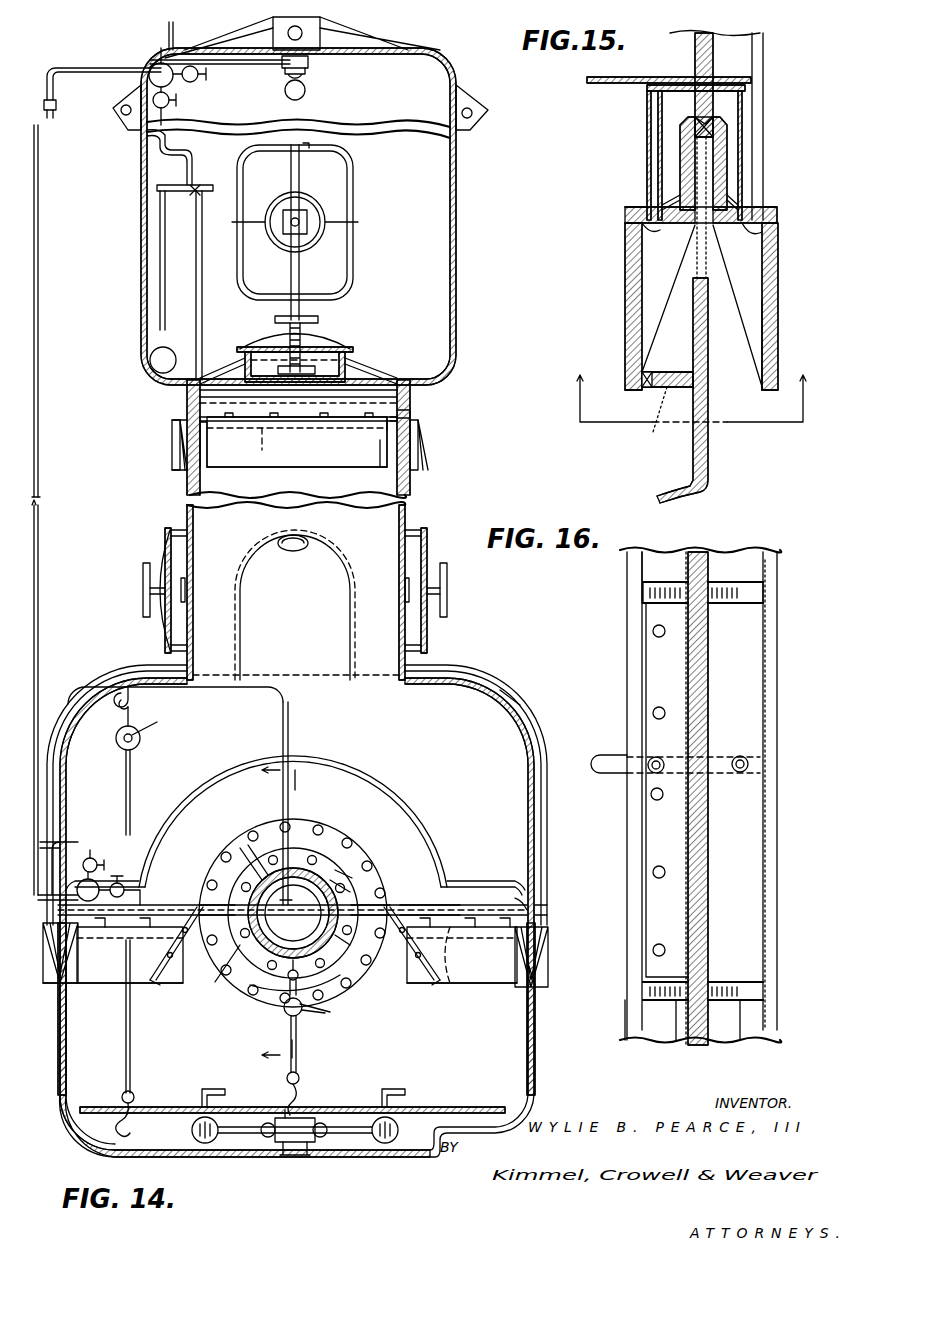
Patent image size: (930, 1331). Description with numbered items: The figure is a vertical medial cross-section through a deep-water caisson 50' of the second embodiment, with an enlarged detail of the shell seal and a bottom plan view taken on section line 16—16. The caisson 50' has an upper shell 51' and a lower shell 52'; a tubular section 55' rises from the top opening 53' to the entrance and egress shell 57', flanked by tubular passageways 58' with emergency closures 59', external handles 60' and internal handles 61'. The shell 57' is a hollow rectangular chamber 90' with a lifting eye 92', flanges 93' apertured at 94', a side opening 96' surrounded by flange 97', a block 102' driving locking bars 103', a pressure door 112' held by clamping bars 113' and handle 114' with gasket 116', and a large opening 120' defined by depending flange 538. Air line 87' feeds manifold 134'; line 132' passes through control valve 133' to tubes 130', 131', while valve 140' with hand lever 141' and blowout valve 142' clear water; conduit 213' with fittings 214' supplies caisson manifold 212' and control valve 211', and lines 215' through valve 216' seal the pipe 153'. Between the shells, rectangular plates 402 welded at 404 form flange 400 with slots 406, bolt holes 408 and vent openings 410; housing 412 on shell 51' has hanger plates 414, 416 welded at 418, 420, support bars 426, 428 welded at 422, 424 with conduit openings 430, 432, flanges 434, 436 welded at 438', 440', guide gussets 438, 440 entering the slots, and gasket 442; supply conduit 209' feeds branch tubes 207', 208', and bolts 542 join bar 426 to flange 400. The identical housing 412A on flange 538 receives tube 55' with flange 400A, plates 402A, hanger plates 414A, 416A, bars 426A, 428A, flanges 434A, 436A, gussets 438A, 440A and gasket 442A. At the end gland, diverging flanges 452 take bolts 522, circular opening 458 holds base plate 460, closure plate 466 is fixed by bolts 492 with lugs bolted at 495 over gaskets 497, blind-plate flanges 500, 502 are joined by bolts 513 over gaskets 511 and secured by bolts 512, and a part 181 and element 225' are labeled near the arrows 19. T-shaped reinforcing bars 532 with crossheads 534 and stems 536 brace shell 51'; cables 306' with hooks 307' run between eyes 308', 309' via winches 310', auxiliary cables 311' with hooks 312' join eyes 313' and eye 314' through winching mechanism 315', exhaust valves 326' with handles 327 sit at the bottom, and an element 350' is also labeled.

In FIG. 14, the direction arrow 19 is at (288, 922).
In FIG. 14, the caisson 50' is at (297, 892).
In FIG. 14, the upper shell 51' is at (532, 701).
In FIG. 15, the upper shell 51' is at (702, 84).
In FIG. 14, the lower shell 52' is at (317, 1009).
In FIG. 15, the lower shell 52' is at (703, 390).
In FIG. 16, the lower shell 52' is at (724, 798).
In FIG. 14, the top opening 53' is at (296, 620).
In FIG. 14, the tubular section 55' is at (322, 485).
In FIG. 14, the entrance and egress shell 57' is at (329, 144).
In FIG. 14, the tubular passageways 58' is at (313, 586).
In FIG. 14, the outside emergency closures 59' is at (142, 590).
In FIG. 14, the external operating handles 60' is at (295, 590).
In FIG. 14, the internal operating handles 61' is at (295, 588).
In FIG. 14, the high pressure air line 87' is at (153, 35).
In FIG. 14, the hollow rectangular chamber 90' is at (317, 216).
In FIG. 14, the lifting eye 92' is at (302, 32).
In FIG. 14, the laterally extending flanges 93' is at (298, 102).
In FIG. 14, the apertures 94' is at (305, 164).
In FIG. 14, the side opening 96' is at (318, 222).
In FIG. 14, the flange 97' is at (332, 222).
In FIG. 14, the block 102' is at (317, 205).
In FIG. 14, the locking bars 103' is at (295, 231).
In FIG. 14, the pressure door 112' is at (311, 337).
In FIG. 14, the clamping bars 113' is at (270, 346).
In FIG. 14, the operating handle 114' is at (321, 316).
In FIG. 14, the sealing gasket 116' is at (308, 361).
In FIG. 14, the large opening 120' is at (298, 404).
In FIG. 14, the air tube 130' is at (298, 402).
In FIG. 14, the air tube 131' is at (267, 437).
In FIG. 14, the air line 132' is at (195, 285).
In FIG. 14, the control valve 133' is at (183, 106).
In FIG. 14, the air manifold 134' is at (238, 298).
In FIG. 14, the valve 140' is at (144, 374).
In FIG. 14, the hand lever 141' is at (190, 162).
In FIG. 14, the blowout valve 142' is at (200, 83).
In FIG. 14, the pipe 153' is at (293, 913).
In FIG. 14, the lever 181 is at (330, 1018).
In FIG. 14, the inner branch tube 207' is at (292, 883).
In FIG. 15, the inner branch tube 207' is at (670, 152).
In FIG. 16, the inner branch tube 207' is at (606, 681).
In FIG. 14, the outer branch tube 208' is at (561, 882).
In FIG. 15, the outer branch tube 208' is at (780, 126).
In FIG. 16, the outer branch tube 208' is at (785, 795).
In FIG. 14, the compressed air supply conduit 209' is at (295, 825).
In FIG. 15, the compressed air supply conduit 209' is at (664, 98).
In FIG. 16, the compressed air supply conduit 209' is at (671, 752).
In FIG. 14, the control valve 211' is at (113, 875).
In FIG. 14, the caisson air manifold 212' is at (107, 854).
In FIG. 14, the supply conduit 213' is at (55, 510).
In FIG. 14, the fittings 214' is at (99, 484).
In FIG. 14, the air lines 215' is at (306, 803).
In FIG. 14, the control valve 216' is at (79, 834).
In FIG. 14, the ring 225' is at (322, 886).
In FIG. 14, the cables 306' is at (153, 921).
In FIG. 14, the hooks 307' is at (151, 1088).
In FIG. 14, the eyes 308' is at (109, 1134).
In FIG. 14, the eyes 309' is at (147, 700).
In FIG. 14, the winch assemblies 310' is at (121, 744).
In FIG. 14, the auxiliary cables 311' is at (321, 1044).
In FIG. 14, the hooks 312' is at (325, 1045).
In FIG. 14, the eyes 313' is at (293, 1149).
In FIG. 14, the eye 314' is at (279, 1010).
In FIG. 14, the winching mechanism 315' is at (268, 1001).
In FIG. 14, the exhaust valves 326' is at (292, 1140).
In FIG. 14, the handles 327 is at (213, 1092).
In FIG. 14, the bracket 350' is at (275, 79).
In FIG. 16, the flange 400 is at (635, 933).
In FIG. 14, the flange 400A is at (282, 444).
In FIG. 14, the rectangular plates 402 is at (105, 945).
In FIG. 15, the rectangular plates 402 is at (635, 372).
In FIG. 16, the rectangular plates 402 is at (655, 895).
In FIG. 14, the plates 402A is at (380, 440).
In FIG. 15, the welds 404 is at (692, 372).
In FIG. 16, the welds 404 is at (686, 855).
In FIG. 16, the slots 406 is at (645, 592).
In FIG. 15, the bolt holes 408 is at (648, 387).
In FIG. 16, the bolt holes 408 is at (657, 710).
In FIG. 16, the openings 410 is at (645, 775).
In FIG. 15, the housing 412 is at (614, 286).
In FIG. 14, the housing 412A is at (174, 438).
In FIG. 15, the inner hanger plate 414 is at (680, 160).
In FIG. 14, the inner hanger plate 414A is at (372, 427).
In FIG. 15, the outer hanger plate 416 is at (727, 160).
In FIG. 14, the outer hanger plate 416A is at (412, 420).
In FIG. 15, the weld 418 is at (682, 114).
In FIG. 15, the weld 420 is at (716, 120).
In FIG. 15, the weld 422 is at (666, 198).
In FIG. 15, the weld 424 is at (740, 190).
In FIG. 15, the inner support bar 426 is at (660, 226).
In FIG. 14, the inner support bar 426A is at (300, 417).
In FIG. 14, the outer support bar 428 is at (45, 960).
In FIG. 15, the outer support bar 428 is at (778, 238).
In FIG. 16, the outer support bar 428 is at (770, 815).
In FIG. 14, the outer support bar 428A is at (425, 437).
In FIG. 15, the conduit receiving opening 430 is at (650, 222).
In FIG. 15, the conduit receiving opening 432 is at (778, 218).
In FIG. 16, the conduit receiving opening 432 is at (750, 770).
In FIG. 14, the inner flange 434 is at (112, 970).
In FIG. 15, the inner flange 434 is at (625, 343).
In FIG. 16, the inner flange 434 is at (625, 1010).
In FIG. 14, the inner flange 434A is at (210, 455).
In FIG. 14, the outer flange 436 is at (548, 965).
In FIG. 15, the outer flange 436 is at (778, 328).
In FIG. 16, the outer flange 436 is at (775, 950).
In FIG. 14, the outer flange 436A is at (178, 453).
In FIG. 14, the guide gusset plates 438 is at (521, 949).
In FIG. 15, the guide gusset plates 438 is at (607, 306).
In FIG. 16, the guide gusset plates 438 is at (663, 1037).
In FIG. 14, the guide gusset plates 438A is at (200, 426).
In FIG. 15, the weld 438' is at (604, 214).
In FIG. 14, the guide gusset plates 440 is at (45, 999).
In FIG. 15, the guide gusset plates 440 is at (791, 331).
In FIG. 16, the guide gusset plates 440 is at (740, 1030).
In FIG. 14, the guide gusset plates 440A is at (172, 422).
In FIG. 15, the weld 440' is at (783, 191).
In FIG. 15, the compressible sealing gasket 442 is at (718, 128).
In FIG. 14, the sealing gasket 442A is at (412, 412).
In FIG. 14, the downwardly diverging flanges 452 is at (170, 962).
In FIG. 14, the circular openings 458 is at (305, 815).
In FIG. 14, the second base plate 460 is at (340, 880).
In FIG. 14, the upper closure plate 466 is at (320, 860).
In FIG. 14, the connecting bolts 492 is at (270, 825).
In FIG. 14, the fastening bolts 495 is at (205, 893).
In FIG. 14, the sealing gaskets 497 is at (420, 905).
In FIG. 14, the flange 500 is at (340, 935).
In FIG. 14, the flange 502 is at (345, 865).
In FIG. 14, the sealing gaskets 511 is at (330, 905).
In FIG. 14, the fastening bolts 512 is at (252, 850).
In FIG. 14, the bolts 513 is at (255, 850).
In FIG. 14, the bolts 522 is at (160, 982).
In FIG. 14, the T-shaped reinforcing bars 532 is at (94, 680).
In FIG. 14, the crossheads 534 is at (58, 720).
In FIG. 14, the stems 536 is at (135, 678).
In FIG. 16, the stems 536 is at (591, 765).
In FIG. 14, the depending continuous flange 538 is at (410, 398).
In FIG. 14, the bolts 542 is at (262, 430).
In FIG. 15, the section line 16 is at (691, 398).